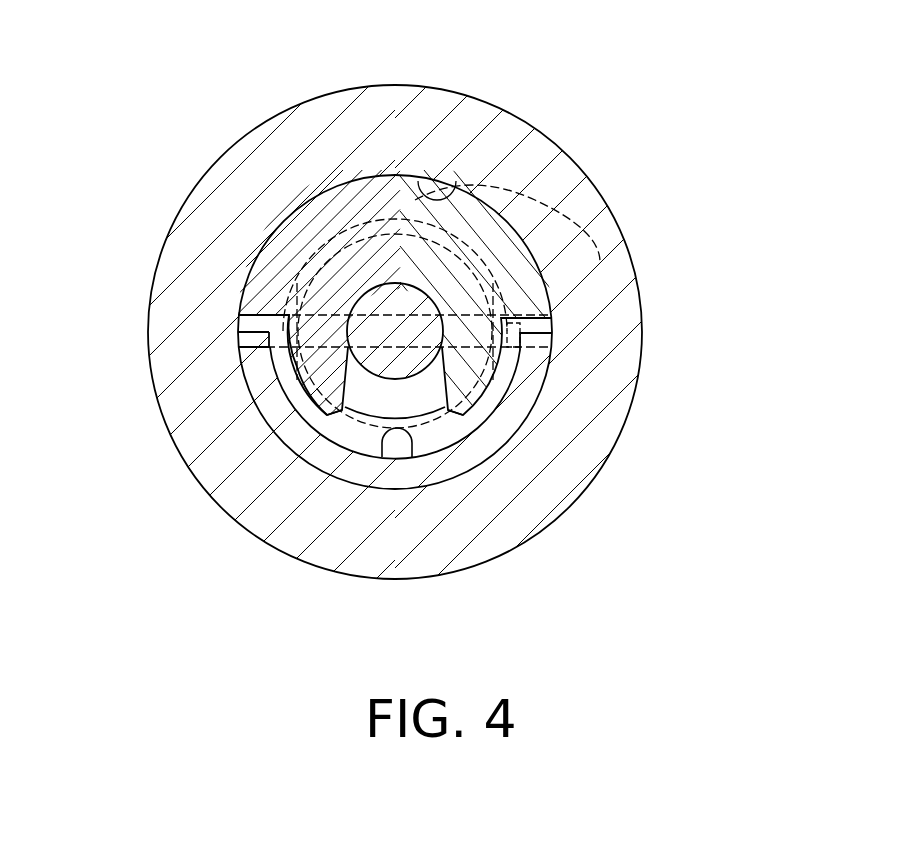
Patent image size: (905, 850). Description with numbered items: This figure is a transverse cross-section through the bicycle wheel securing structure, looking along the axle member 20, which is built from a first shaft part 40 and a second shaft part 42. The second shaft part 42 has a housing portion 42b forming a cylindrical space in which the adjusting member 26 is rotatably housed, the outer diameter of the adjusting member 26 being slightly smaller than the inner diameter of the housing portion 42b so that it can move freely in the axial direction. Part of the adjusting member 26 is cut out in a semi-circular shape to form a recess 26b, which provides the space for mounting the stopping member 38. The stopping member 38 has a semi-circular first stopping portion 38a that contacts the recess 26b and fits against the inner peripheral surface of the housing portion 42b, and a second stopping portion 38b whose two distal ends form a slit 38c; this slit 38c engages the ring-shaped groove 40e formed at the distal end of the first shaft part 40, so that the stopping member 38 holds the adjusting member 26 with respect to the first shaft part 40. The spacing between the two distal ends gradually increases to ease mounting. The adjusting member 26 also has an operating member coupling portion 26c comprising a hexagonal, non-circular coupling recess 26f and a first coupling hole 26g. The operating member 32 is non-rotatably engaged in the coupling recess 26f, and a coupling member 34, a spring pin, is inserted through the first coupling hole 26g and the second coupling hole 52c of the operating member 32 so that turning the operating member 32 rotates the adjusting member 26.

The axle member 20 is at (583, 135).
The adjusting member 26 is at (507, 457).
The recess 26b is at (320, 320).
The operating member coupling portion 26c is at (357, 390).
The coupling recess 26f is at (540, 297).
The first coupling hole 26g is at (242, 333).
The operating member 32 is at (598, 182).
The coupling member 34 is at (250, 272).
The stopping member 38 is at (353, 175).
The first stopping portion 38a is at (345, 207).
The second stopping portion 38b is at (283, 390).
The slit 38c is at (333, 478).
The first shaft part 40 is at (428, 413).
The ring-shaped groove 40e is at (402, 283).
The second shaft part 42 is at (613, 192).
The housing portion 42b is at (438, 181).
The second coupling hole 52c is at (540, 320).